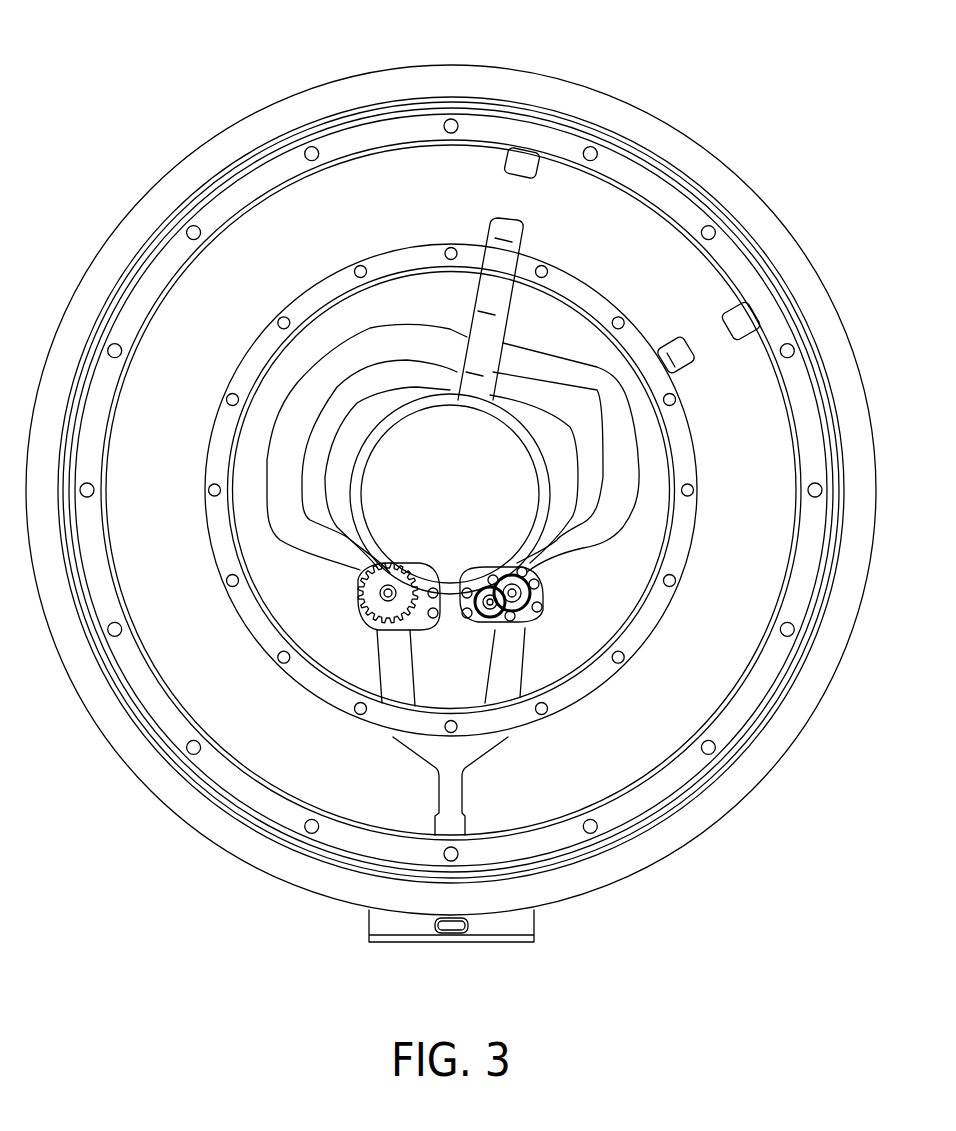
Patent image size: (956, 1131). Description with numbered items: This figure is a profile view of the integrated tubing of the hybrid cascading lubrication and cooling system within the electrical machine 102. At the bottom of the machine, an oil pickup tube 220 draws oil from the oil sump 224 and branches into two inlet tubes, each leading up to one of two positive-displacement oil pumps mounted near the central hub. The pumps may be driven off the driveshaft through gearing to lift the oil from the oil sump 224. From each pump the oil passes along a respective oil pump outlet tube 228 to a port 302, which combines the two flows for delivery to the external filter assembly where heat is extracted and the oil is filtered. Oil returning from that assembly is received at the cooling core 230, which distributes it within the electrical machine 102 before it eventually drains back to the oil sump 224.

The electrical machine 102 is at (515, 68).
The oil pickup tube 220 is at (452, 933).
The oil sump 224 is at (511, 943).
The oil pump outlet tube 228 is at (303, 399).
The cooling core 230 is at (499, 218).
The port 302 is at (680, 345).